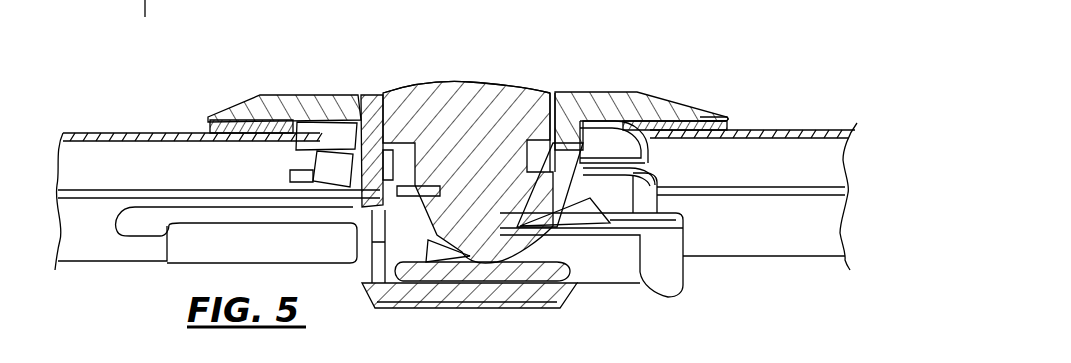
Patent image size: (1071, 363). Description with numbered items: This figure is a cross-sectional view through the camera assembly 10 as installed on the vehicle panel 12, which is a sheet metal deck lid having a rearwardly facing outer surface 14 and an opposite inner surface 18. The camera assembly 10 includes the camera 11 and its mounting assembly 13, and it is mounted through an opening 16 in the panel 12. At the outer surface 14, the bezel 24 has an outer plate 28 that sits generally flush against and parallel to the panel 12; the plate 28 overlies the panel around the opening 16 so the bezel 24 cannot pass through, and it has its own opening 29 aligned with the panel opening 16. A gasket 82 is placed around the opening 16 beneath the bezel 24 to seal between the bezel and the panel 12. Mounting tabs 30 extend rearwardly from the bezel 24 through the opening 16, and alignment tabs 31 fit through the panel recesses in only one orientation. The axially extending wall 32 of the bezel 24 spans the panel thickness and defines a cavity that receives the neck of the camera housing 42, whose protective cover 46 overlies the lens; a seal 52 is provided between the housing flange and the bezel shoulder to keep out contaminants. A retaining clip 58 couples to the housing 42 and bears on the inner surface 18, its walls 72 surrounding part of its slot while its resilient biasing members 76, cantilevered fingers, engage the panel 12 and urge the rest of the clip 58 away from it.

The camera assembly 10 is at (567, 52).
The camera 11 is at (405, 107).
The panel 12 is at (826, 112).
The mounting assembly 13 is at (322, 273).
The outer surface 14 is at (773, 128).
The opening 16 is at (303, 143).
The inner surface 18 is at (166, 144).
The bezel 24 is at (735, 105).
The outer plate 28 is at (633, 103).
The opening 29 is at (550, 98).
The mounting tabs 30 is at (577, 222).
The alignment tabs 31 is at (333, 167).
The axially extending wall 32 is at (583, 168).
The housing 42 is at (407, 270).
The protective cover 46 is at (465, 85).
The seal 52 is at (372, 145).
The retaining clip 58 is at (215, 213).
The walls 72 is at (672, 268).
The biasing members 76 is at (653, 205).
The gasket 82 is at (697, 128).